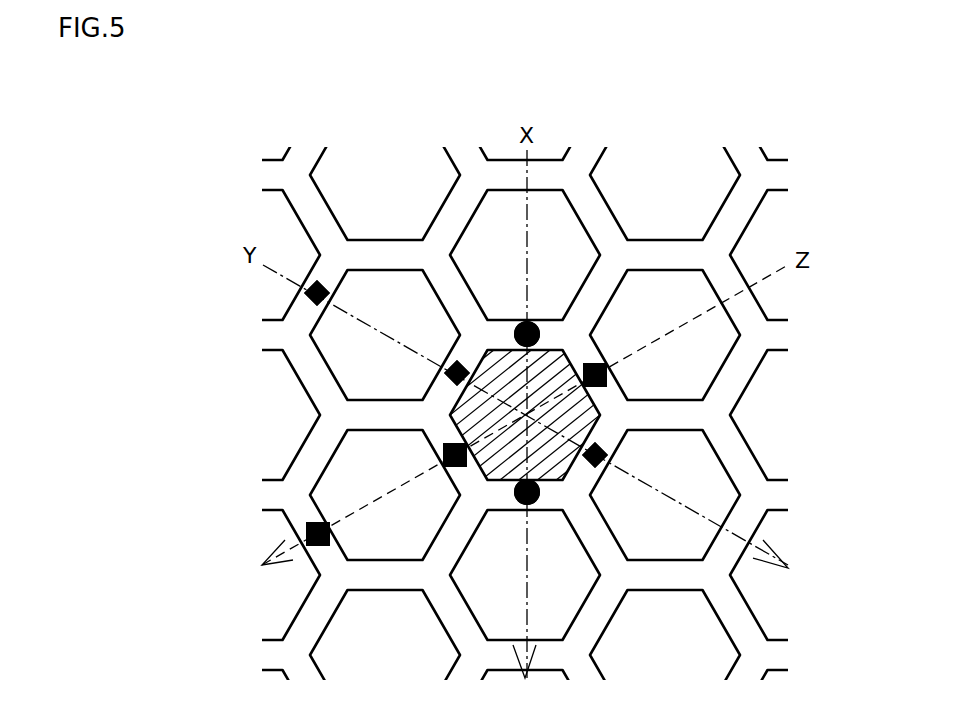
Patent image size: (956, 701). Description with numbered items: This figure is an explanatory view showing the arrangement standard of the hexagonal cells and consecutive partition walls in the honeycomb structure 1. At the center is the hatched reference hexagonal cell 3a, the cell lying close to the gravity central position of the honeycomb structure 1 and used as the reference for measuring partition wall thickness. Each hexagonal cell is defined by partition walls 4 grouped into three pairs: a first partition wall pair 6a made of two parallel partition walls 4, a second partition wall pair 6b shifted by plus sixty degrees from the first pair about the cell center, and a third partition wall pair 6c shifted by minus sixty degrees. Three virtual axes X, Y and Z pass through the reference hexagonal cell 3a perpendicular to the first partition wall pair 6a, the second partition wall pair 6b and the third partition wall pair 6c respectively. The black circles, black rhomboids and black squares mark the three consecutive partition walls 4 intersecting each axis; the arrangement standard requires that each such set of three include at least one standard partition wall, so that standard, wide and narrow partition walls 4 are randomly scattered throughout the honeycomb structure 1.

The honeycomb structure 1 is at (140, 107).
The reference hexagonal cell 3a is at (586, 333).
The partition wall 4 is at (456, 413).
The first partition wall pair 6a is at (508, 330).
The second partition wall pair 6b is at (446, 378).
The third partition wall pair 6c is at (447, 440).